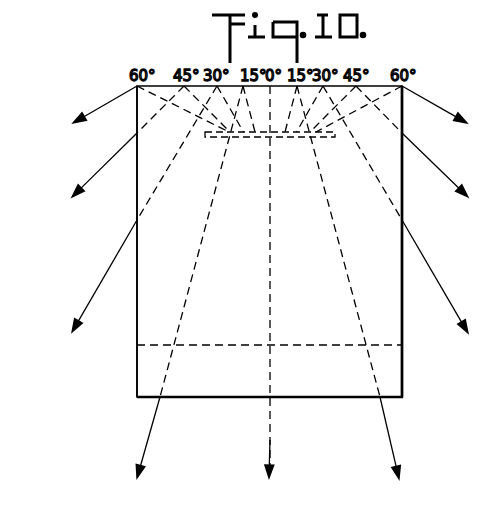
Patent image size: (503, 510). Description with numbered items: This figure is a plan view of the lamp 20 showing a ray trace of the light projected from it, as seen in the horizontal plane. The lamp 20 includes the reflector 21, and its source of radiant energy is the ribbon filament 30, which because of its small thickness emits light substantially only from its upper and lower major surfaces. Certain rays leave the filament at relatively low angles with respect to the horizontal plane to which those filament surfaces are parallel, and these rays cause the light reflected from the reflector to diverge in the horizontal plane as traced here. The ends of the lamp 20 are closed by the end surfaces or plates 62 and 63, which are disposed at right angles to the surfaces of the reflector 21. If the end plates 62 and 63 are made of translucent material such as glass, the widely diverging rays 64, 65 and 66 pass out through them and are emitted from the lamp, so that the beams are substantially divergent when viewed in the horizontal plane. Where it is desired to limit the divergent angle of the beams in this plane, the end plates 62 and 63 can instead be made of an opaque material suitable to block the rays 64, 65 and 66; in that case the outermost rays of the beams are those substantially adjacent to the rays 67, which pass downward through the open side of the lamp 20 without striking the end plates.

The lamp 20 is at (135, 348).
The reflector 21 is at (382, 325).
The ribbon filament 30 is at (288, 137).
The end plate 62 is at (137, 293).
The end plate 63 is at (402, 290).
The ray 64 is at (98, 108).
The ray 65 is at (97, 172).
The ray 66 is at (87, 306).
The ray 67 is at (146, 440).